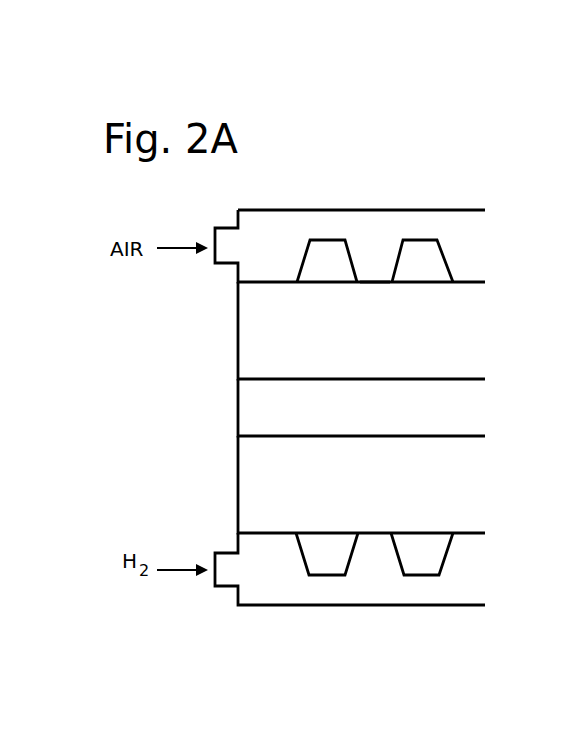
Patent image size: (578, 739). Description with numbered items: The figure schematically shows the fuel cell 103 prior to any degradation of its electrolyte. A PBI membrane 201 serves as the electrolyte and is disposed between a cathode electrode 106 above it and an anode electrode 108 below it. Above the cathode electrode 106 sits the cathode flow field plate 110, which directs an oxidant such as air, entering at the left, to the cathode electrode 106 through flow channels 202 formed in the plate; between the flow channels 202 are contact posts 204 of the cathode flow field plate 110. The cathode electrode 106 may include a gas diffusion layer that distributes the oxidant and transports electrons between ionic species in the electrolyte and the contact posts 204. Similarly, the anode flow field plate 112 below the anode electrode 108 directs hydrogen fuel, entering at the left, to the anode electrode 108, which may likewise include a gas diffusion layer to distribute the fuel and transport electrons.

The fuel cell 103 is at (458, 178).
The cathode flow field plate 110 is at (263, 227).
The flow channels 202 is at (412, 240).
The contact posts 204 is at (374, 260).
The cathode electrode 106 is at (255, 328).
The PBI membrane 201 is at (263, 416).
The anode electrode 108 is at (263, 492).
The anode flow field plate 112 is at (262, 592).